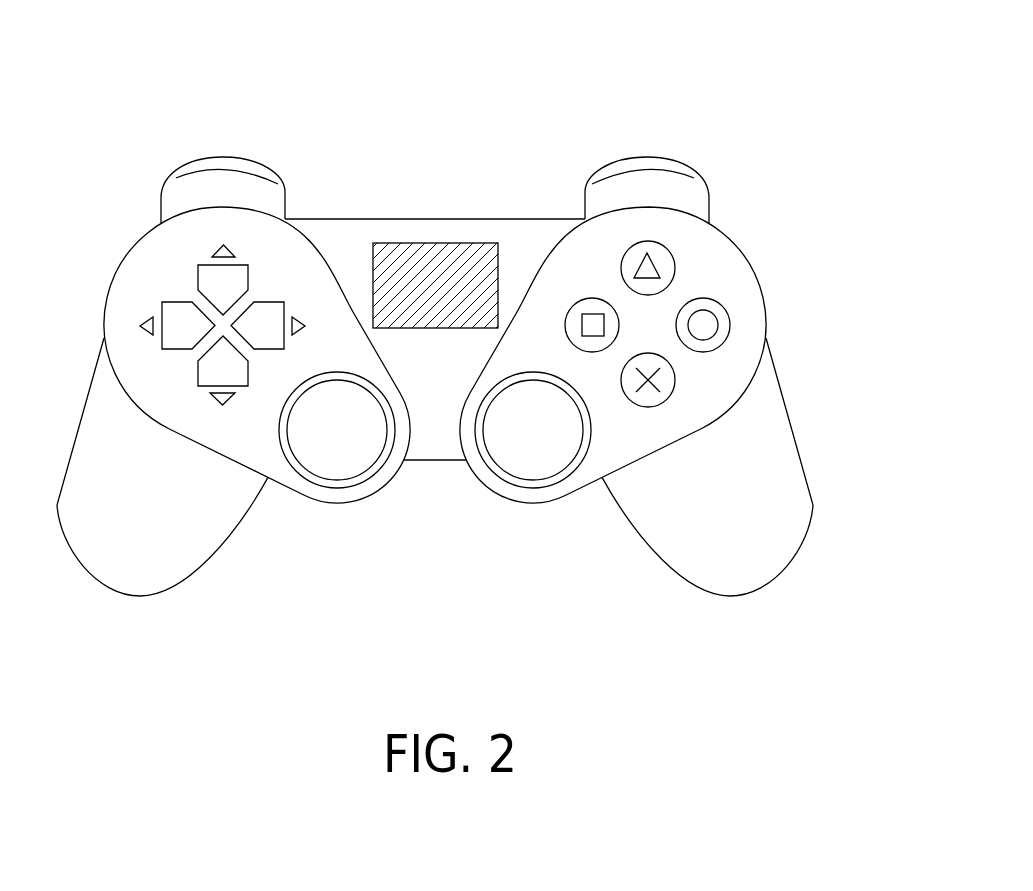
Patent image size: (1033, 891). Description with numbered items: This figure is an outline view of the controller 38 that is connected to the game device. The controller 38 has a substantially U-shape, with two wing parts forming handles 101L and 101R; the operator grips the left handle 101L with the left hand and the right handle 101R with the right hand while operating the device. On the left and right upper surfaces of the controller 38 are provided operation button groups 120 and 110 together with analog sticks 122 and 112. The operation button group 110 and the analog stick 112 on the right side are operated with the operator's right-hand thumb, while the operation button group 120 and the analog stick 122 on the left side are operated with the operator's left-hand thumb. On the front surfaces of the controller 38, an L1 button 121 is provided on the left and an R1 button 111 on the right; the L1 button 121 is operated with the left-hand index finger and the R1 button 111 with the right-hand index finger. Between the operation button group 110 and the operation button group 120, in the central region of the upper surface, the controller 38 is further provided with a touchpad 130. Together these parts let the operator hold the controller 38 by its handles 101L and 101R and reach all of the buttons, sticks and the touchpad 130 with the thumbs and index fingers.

The controller 38 is at (723, 83).
The handle 101L is at (193, 538).
The handle 101R is at (677, 538).
The operation button group 110 is at (700, 268).
The R1 button 111 is at (627, 157).
The analog stick 112 is at (520, 463).
The operation button group 120 is at (170, 268).
The L1 button 121 is at (243, 157).
The analog stick 122 is at (350, 463).
The touchpad 130 is at (455, 250).